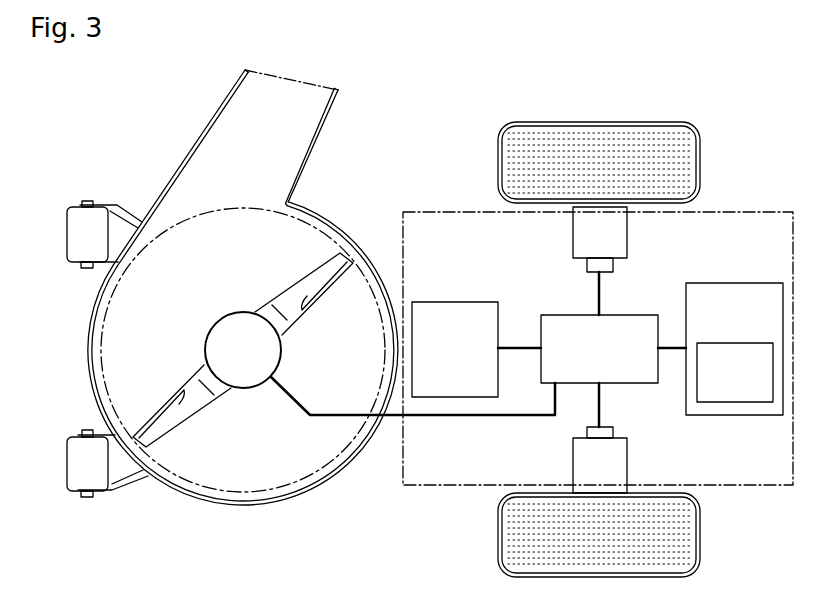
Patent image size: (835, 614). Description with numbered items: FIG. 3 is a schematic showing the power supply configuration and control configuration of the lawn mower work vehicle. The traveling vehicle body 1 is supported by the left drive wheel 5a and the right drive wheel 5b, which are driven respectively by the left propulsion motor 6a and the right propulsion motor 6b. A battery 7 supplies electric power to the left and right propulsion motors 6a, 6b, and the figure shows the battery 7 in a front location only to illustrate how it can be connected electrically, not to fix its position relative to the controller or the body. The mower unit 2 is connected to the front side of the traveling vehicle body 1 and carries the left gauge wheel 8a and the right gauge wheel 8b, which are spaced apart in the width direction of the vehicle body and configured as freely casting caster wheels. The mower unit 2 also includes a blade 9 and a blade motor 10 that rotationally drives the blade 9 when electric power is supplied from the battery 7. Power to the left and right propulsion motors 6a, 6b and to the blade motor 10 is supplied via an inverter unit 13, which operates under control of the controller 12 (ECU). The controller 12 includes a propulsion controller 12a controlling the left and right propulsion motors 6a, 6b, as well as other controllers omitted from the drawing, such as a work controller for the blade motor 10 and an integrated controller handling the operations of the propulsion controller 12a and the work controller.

The traveling vehicle body 1 is at (736, 490).
The mower unit 2 is at (160, 191).
The left drive wheel 5a is at (498, 542).
The right drive wheel 5b is at (498, 163).
The left propulsion motor 6a is at (573, 469).
The right propulsion motor 6b is at (573, 239).
The battery 7 is at (440, 302).
The left gauge wheel 8a is at (78, 484).
The right gauge wheel 8b is at (72, 218).
The blade 9 is at (297, 277).
The blade motor 10 is at (213, 332).
The controller 12 is at (750, 283).
The propulsion controller 12a is at (735, 402).
The inverter unit 13 is at (645, 315).